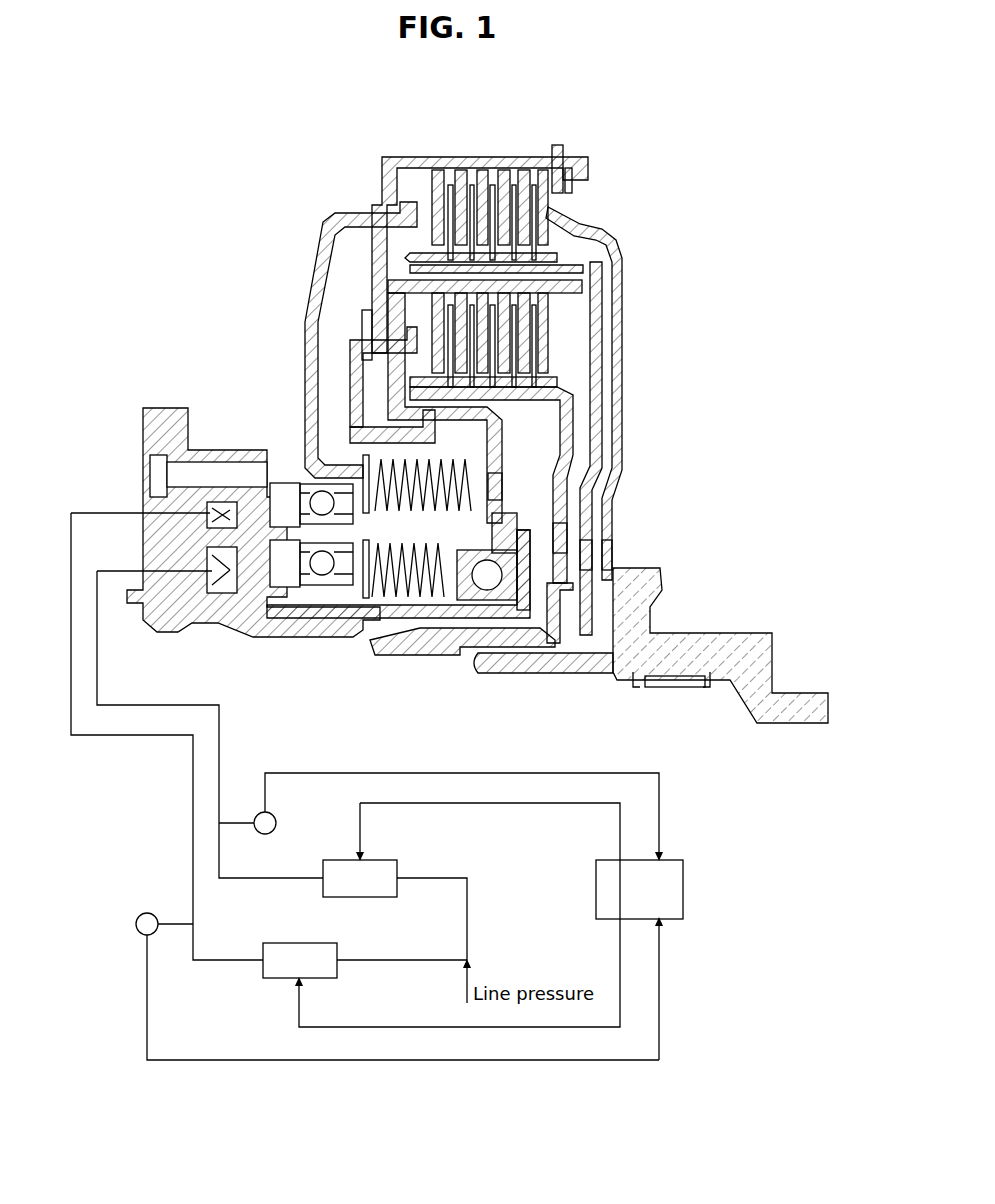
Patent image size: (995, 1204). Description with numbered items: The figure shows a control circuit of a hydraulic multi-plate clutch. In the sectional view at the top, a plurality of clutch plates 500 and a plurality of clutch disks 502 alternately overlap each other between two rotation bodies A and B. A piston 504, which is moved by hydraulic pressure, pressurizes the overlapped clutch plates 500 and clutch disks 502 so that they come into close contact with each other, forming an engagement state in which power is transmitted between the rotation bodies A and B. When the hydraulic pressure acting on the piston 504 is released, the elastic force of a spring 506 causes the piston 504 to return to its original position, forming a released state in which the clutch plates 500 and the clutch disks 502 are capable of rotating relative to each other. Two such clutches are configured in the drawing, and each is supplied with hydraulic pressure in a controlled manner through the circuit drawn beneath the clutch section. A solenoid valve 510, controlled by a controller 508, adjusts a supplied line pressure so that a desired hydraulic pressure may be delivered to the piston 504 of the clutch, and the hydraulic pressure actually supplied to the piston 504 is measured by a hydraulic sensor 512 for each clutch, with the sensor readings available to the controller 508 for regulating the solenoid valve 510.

The clutch plates 500 is at (523, 170).
The clutch disks 502 is at (493, 193).
The piston 504 is at (255, 510).
The spring 506 is at (457, 460).
The controller 508 is at (683, 889).
The solenoid valve 510 is at (265, 975).
The hydraulic sensor 512 is at (143, 915).
The rotation body A is at (430, 157).
The rotation body B is at (587, 268).